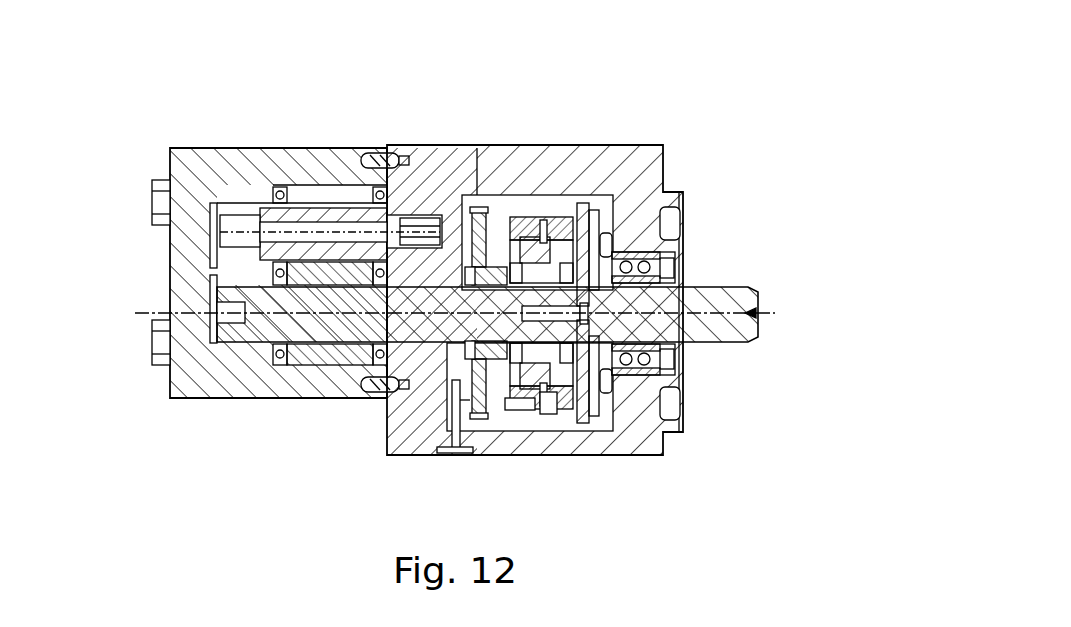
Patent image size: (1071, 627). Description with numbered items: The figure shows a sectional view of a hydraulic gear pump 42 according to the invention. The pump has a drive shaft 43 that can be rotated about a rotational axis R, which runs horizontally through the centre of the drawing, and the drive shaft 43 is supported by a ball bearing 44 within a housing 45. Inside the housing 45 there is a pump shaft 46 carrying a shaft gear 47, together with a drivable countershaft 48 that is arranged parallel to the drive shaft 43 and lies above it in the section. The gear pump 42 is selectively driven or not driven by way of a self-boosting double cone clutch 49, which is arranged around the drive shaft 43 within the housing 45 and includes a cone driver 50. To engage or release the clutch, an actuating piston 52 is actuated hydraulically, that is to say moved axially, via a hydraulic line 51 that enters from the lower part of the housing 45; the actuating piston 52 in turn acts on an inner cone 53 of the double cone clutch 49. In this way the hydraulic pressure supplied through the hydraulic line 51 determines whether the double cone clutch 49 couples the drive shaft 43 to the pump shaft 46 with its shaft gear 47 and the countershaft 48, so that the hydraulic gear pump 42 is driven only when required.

The hydraulic gear pump 42 is at (650, 130).
The drive shaft 43 is at (740, 322).
The ball bearing 44 is at (668, 357).
The housing 45 is at (178, 280).
The pump shaft 46 is at (557, 290).
The shaft gear 47 is at (328, 362).
The countershaft 48 is at (318, 205).
The self-boosting double cone clutch 49 is at (570, 196).
The cone driver 50 is at (560, 414).
The hydraulic line 51 is at (440, 422).
The actuating piston 52 is at (490, 205).
The inner cone 53 is at (523, 410).
The rotational axis R is at (693, 311).